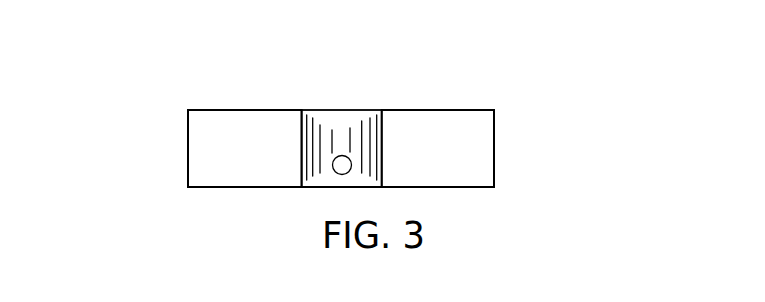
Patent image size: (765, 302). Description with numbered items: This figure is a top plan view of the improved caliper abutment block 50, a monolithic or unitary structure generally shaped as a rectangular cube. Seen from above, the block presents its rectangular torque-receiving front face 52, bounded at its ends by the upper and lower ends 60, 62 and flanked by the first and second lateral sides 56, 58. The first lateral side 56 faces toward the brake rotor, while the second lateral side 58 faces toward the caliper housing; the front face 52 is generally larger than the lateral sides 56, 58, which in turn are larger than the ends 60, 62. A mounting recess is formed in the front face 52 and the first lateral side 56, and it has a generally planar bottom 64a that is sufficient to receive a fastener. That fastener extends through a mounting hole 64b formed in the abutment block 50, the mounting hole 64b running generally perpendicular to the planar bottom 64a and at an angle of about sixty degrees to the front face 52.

The caliper abutment block 50 is at (512, 89).
The torque-receiving front face 52 is at (216, 117).
The first lateral side 56 is at (443, 187).
The second lateral side 58 is at (428, 111).
The upper end 60 is at (494, 158).
The lower end 62 is at (188, 127).
The planar bottom 64a is at (338, 120).
The mounting hole 64b is at (341, 166).